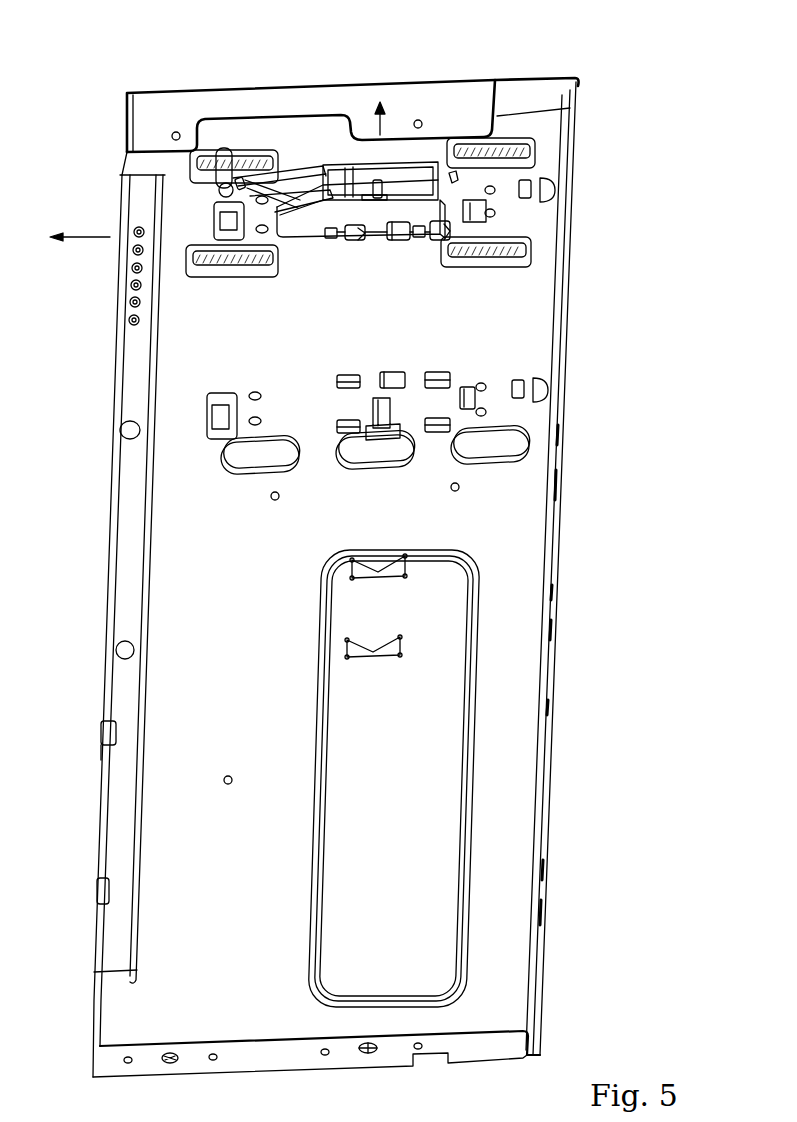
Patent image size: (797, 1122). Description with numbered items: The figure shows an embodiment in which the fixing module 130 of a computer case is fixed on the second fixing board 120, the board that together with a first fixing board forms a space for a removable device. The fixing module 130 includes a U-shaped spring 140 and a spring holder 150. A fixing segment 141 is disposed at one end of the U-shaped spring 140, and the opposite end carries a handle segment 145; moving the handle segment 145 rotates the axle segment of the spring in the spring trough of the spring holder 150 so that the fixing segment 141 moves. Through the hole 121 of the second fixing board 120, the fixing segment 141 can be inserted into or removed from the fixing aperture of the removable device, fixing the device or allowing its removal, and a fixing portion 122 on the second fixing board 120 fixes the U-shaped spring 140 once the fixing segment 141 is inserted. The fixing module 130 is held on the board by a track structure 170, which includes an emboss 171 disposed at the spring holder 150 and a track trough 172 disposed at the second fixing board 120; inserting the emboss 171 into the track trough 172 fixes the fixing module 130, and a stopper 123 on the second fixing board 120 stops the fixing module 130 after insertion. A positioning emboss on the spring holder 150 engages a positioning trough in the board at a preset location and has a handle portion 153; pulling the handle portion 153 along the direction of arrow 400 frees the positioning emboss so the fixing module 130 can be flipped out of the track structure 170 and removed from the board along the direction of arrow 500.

The second fixing board 120 is at (561, 537).
The hole 121 is at (214, 212).
The fixing portion 122 is at (266, 233).
The stopper 123 is at (487, 212).
The fixing module 130 is at (425, 36).
The U-shaped spring 140 is at (177, 121).
The fixing segment 141 is at (265, 195).
The handle segment 145 is at (215, 168).
The spring holder 150 is at (361, 134).
The handle portion 153 is at (377, 184).
The track structure 170 is at (640, 135).
The emboss 171 is at (333, 238).
The track trough 172 is at (450, 178).
The arrow 400 is at (380, 110).
The arrow 500 is at (80, 250).